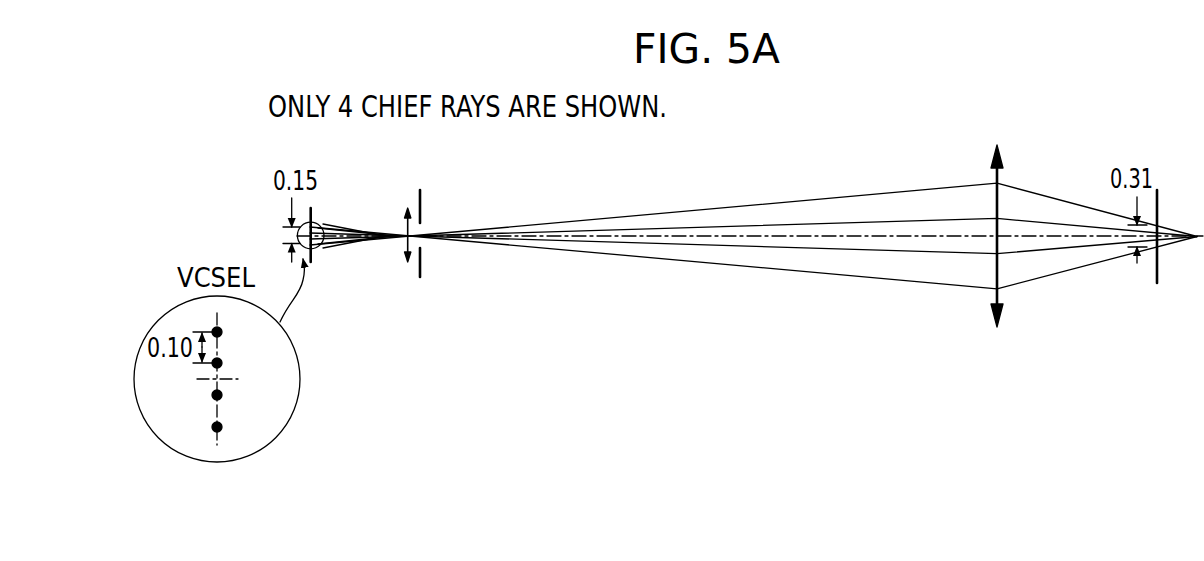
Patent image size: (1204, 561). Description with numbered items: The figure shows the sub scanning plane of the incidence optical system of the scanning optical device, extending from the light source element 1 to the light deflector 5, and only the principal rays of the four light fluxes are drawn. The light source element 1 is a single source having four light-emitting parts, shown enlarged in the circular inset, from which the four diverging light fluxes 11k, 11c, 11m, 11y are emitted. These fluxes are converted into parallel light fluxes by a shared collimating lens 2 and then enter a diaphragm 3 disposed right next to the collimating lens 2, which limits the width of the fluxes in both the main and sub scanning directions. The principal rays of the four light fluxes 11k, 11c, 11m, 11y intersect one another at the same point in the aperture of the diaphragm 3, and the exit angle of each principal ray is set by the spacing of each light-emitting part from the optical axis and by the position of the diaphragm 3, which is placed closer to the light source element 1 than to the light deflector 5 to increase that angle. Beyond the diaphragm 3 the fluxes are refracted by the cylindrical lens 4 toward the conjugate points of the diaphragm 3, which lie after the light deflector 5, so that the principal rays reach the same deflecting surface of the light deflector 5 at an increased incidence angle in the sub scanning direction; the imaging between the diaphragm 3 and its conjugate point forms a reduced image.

The light source element 1 is at (312, 263).
The collimating lens 2 is at (404, 249).
The diaphragm 3 is at (420, 278).
The cylindrical lens 4 is at (1005, 295).
The light deflector 5 is at (1157, 283).
The light flux 11y is at (585, 217).
The light flux 11m is at (693, 226).
The light flux 11c is at (692, 245).
The light flux 11k is at (593, 255).